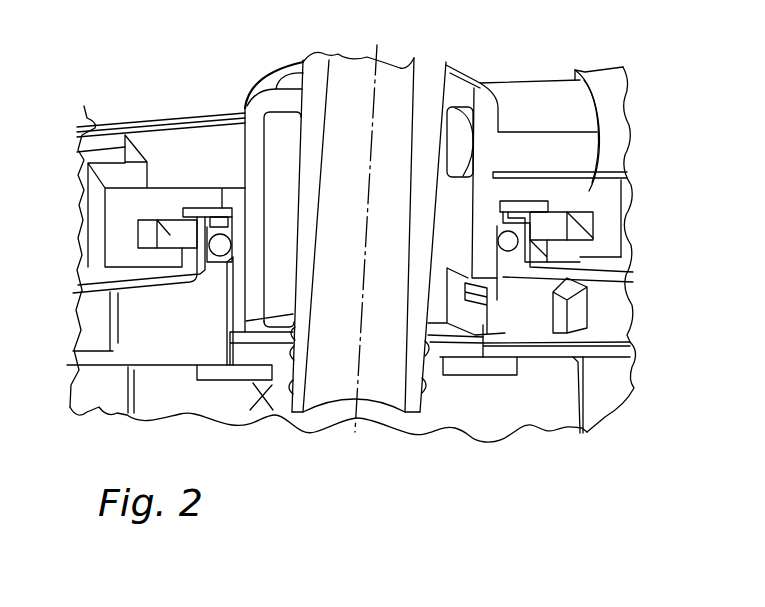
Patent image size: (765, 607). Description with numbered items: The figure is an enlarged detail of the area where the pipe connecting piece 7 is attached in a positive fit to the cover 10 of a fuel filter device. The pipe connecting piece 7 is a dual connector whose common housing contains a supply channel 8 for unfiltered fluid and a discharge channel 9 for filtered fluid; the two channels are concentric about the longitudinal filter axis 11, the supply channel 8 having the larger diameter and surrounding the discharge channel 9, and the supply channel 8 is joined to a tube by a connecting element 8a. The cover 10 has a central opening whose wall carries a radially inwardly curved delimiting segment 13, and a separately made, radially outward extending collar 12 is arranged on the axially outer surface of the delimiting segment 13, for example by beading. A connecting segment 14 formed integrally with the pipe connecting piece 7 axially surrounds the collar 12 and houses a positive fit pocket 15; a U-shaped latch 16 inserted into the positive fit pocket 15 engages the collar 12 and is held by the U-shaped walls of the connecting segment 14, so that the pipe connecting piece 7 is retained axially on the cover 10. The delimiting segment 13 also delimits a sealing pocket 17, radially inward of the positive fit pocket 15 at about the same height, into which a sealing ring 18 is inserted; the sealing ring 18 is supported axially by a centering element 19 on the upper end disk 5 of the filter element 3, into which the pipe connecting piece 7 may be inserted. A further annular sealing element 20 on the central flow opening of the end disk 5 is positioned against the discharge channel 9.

The filter element 3 is at (579, 428).
The end disk 5 is at (627, 336).
The pipe connecting piece 7 is at (267, 66).
The supply channel 8 is at (278, 168).
The connecting element 8a is at (528, 85).
The discharge channel 9 is at (415, 63).
The cover 10 is at (163, 280).
The longitudinal filter axis 11 is at (353, 428).
The collar 12 is at (202, 210).
The delimiting segment 13 is at (216, 214).
The connecting segment 14 is at (612, 203).
The positive fit pocket 15 is at (143, 238).
The latch 16 is at (168, 234).
The sealing pocket 17 is at (232, 229).
The sealing ring 18 is at (505, 239).
The centering element 19 is at (492, 300).
The sealing element 20 is at (270, 400).